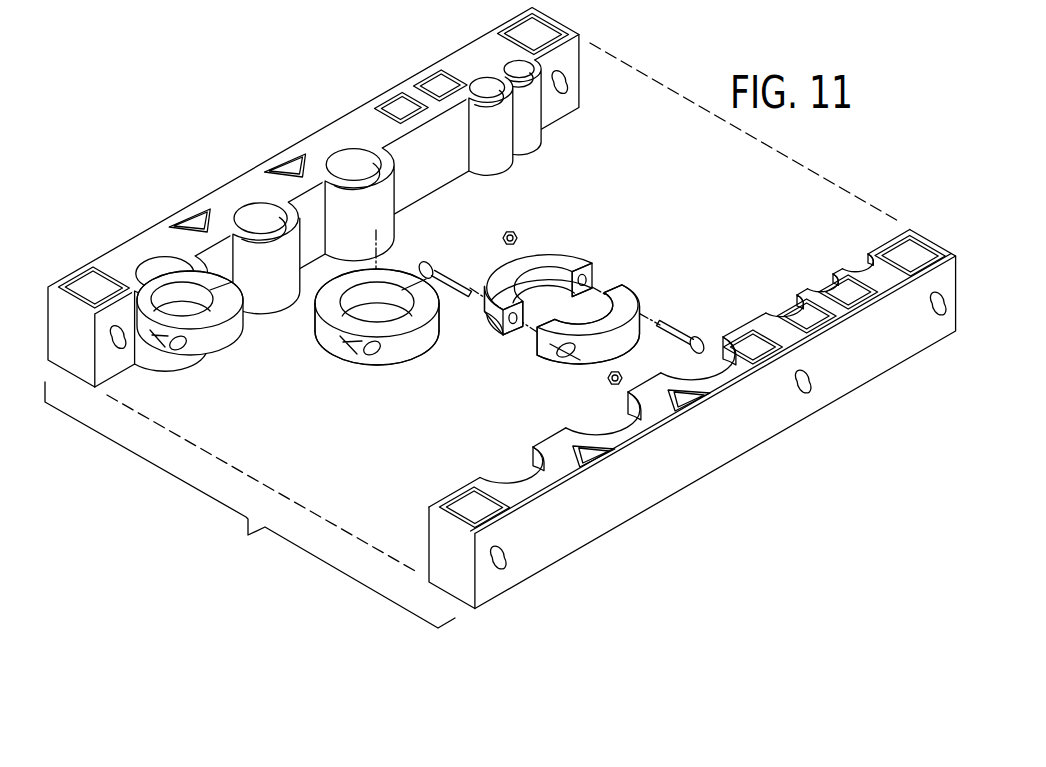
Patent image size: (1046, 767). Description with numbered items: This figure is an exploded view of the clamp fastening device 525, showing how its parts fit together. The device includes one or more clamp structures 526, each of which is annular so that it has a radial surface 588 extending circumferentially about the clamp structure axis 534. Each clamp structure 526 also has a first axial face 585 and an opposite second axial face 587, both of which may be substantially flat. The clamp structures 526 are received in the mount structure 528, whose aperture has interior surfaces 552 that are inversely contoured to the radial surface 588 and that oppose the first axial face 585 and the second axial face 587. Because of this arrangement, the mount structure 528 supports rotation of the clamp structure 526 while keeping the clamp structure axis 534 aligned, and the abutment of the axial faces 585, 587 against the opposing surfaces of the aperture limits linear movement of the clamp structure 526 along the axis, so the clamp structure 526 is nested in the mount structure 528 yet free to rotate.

The clamp fastening device 525 is at (502, 308).
The clamp structure 526 is at (210, 357).
The mount structure 528 is at (472, 335).
The clamp structure axis 534 is at (378, 243).
The interior surfaces 552 is at (266, 226).
The first axial face 585 is at (328, 309).
The second axial face 587 is at (418, 358).
The radial surface 588 is at (432, 335).